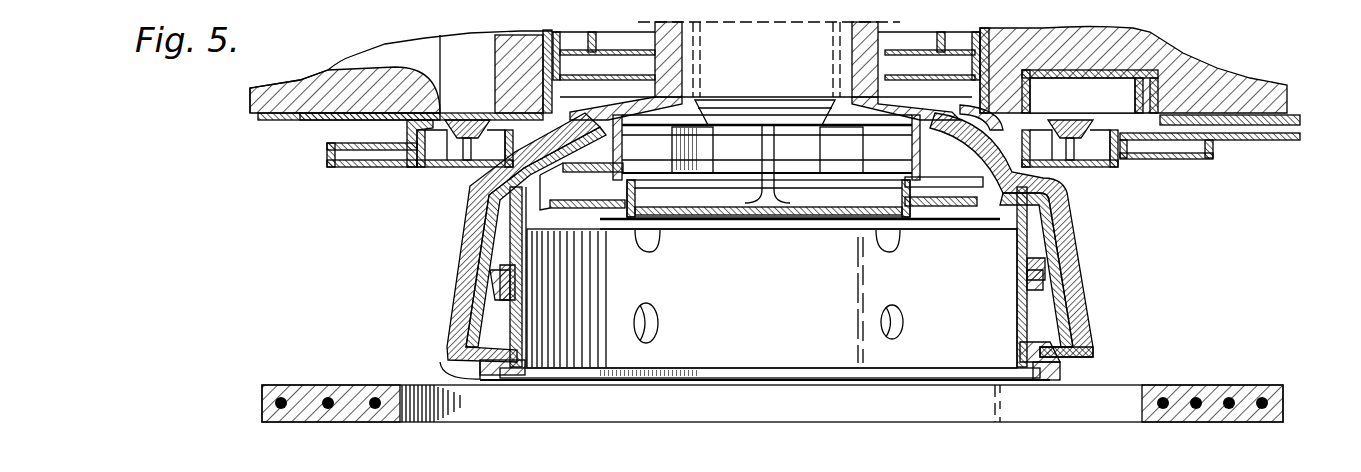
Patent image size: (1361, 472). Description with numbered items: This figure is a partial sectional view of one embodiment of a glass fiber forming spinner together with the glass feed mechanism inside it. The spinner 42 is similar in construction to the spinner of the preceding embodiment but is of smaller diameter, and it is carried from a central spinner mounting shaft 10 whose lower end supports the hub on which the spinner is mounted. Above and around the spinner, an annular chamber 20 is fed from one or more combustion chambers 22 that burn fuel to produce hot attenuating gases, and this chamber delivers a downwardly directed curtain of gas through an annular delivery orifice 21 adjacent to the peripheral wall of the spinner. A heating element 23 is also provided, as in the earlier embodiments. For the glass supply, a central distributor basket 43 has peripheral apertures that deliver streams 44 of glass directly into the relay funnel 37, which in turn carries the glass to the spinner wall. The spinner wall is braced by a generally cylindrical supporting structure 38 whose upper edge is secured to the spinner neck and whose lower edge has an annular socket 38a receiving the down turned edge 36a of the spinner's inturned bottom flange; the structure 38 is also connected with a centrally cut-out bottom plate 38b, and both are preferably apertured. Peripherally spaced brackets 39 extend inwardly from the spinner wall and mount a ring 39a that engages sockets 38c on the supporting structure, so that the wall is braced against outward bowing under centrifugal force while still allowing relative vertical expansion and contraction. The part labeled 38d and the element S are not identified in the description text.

The combustion chamber 22 is at (478, 76).
The central spinner mounting shaft 10 is at (739, 51).
The stem S is at (768, 140).
The annular chamber 20 is at (1068, 122).
The annular delivery orifice 21 is at (466, 164).
The anchors or brackets 39 is at (472, 261).
The ring 39a is at (470, 292).
The supporting structure 38 is at (1017, 285).
The sockets 38c is at (466, 317).
The annular socket 38a is at (478, 382).
The bottom plate 38b is at (790, 368).
The bottom flange 38d is at (1045, 378).
The down turned edge 36a is at (1020, 352).
The spinner 42 is at (1092, 343).
The relay funnel 37 is at (605, 226).
The central distributor basket 43 is at (808, 219).
The streams of glass 44 is at (942, 205).
The heating element 23 is at (1210, 386).